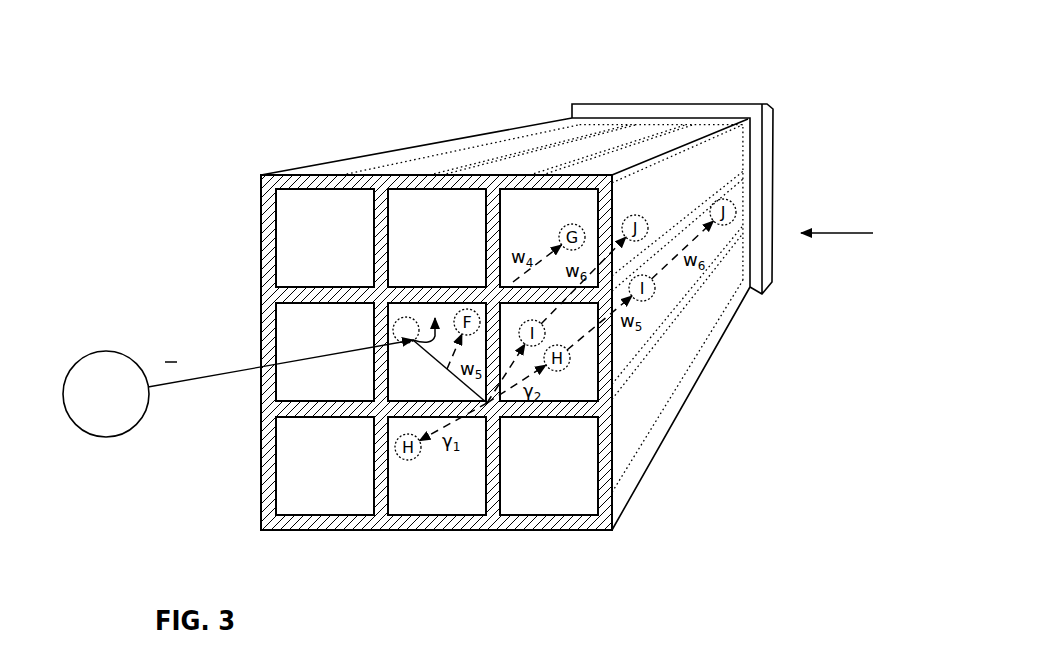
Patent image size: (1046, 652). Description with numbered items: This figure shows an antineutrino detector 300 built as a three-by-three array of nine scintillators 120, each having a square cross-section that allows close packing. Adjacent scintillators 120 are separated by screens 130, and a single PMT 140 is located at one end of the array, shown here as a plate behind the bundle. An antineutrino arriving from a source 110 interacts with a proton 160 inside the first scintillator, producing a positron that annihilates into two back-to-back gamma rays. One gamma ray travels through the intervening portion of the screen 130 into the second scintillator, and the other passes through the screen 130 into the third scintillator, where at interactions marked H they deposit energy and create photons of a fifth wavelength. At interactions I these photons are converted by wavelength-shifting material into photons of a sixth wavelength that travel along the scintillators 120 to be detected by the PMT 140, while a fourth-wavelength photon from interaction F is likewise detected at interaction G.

The antineutrino source 110 is at (128, 432).
The scintillator 120 is at (578, 480).
The screen 130 is at (497, 513).
The PMT 140 is at (770, 283).
The proton 160 is at (408, 345).
The antineutrino detector 300 is at (765, 55).